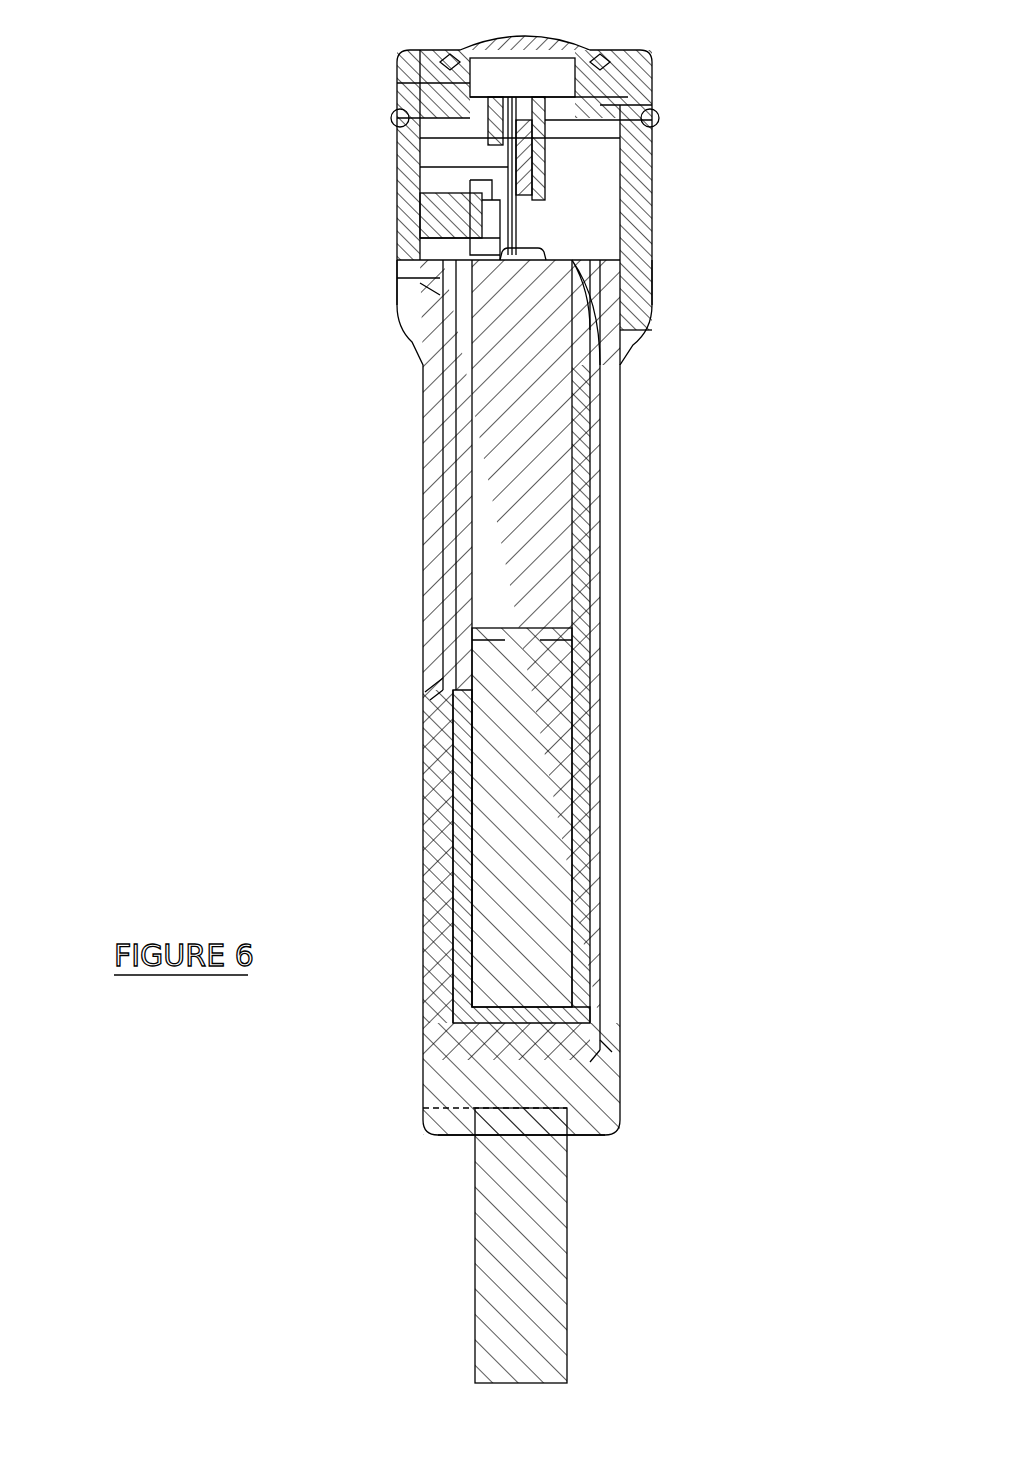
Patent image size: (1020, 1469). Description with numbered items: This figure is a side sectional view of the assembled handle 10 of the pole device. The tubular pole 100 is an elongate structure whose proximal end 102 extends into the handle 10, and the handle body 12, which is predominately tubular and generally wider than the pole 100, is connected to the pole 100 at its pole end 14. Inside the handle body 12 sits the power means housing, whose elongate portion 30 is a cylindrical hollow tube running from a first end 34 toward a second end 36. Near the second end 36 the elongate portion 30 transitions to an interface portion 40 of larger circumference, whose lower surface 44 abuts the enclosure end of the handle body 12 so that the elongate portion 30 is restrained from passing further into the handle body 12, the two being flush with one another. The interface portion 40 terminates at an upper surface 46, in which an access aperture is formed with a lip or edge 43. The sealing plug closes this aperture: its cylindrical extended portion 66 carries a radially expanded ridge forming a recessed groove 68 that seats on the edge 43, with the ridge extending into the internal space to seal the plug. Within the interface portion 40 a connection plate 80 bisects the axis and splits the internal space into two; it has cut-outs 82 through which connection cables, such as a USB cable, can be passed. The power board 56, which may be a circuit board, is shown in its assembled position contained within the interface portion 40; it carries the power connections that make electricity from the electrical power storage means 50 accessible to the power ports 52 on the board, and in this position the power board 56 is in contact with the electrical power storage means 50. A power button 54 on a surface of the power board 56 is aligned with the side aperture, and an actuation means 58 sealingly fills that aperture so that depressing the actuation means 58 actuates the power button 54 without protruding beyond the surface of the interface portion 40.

The handle 10 is at (200, 538).
The handle body 12 is at (423, 790).
The pole end 14 is at (575, 1135).
The elongate portion 30 is at (590, 716).
The first end 34 is at (560, 1020).
The second end 36 is at (716, 308).
The interface portion 40 is at (652, 255).
The edge 43 is at (397, 83).
The lower surface 44 is at (410, 283).
The upper surface 46 is at (445, 65).
The electrical power storage means 50 is at (560, 252).
The power ports 52 is at (620, 140).
The power button 54 is at (490, 237).
The power board 56 is at (420, 167).
The actuation means 58 is at (420, 218).
The extended portion 66 is at (462, 85).
The recessed groove 68 is at (605, 62).
The connection plate 80 is at (391, 122).
The cut-outs 82 is at (659, 115).
The pole 100 is at (490, 1305).
The proximal end 102 is at (423, 1108).